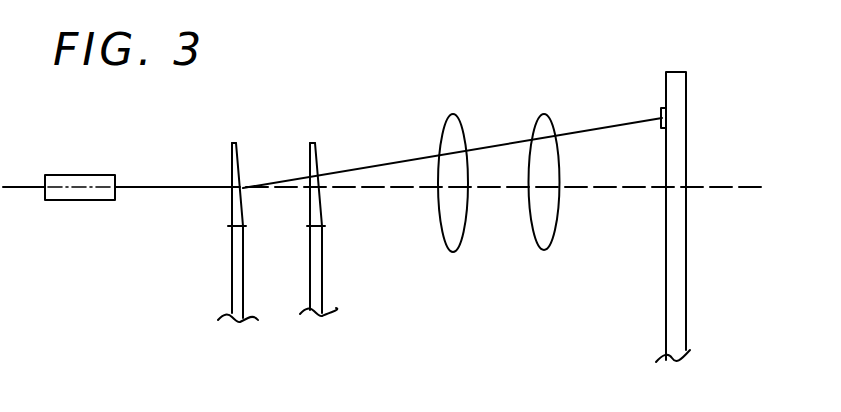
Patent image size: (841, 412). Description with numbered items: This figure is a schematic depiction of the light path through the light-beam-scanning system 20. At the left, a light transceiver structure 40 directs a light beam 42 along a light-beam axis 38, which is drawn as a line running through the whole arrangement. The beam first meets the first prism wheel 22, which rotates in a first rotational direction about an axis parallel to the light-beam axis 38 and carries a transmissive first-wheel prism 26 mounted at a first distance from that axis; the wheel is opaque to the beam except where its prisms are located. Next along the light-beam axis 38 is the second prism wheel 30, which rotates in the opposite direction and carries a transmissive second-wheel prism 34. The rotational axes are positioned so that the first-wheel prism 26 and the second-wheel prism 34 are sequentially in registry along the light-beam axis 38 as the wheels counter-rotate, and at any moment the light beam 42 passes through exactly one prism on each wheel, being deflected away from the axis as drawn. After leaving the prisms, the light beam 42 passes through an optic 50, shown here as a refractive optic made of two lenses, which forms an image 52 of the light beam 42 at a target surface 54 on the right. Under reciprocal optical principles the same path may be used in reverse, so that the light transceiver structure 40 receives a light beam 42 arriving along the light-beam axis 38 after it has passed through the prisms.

The light-beam-scanning system 20 is at (513, 72).
The first prism wheel 22 is at (230, 281).
The first-wheel prism 26 is at (232, 153).
The second prism wheel 30 is at (323, 273).
The second-wheel prism 34 is at (310, 153).
The light-beam axis 38 is at (152, 186).
The light transceiver structure 40 is at (68, 175).
The light beam 42 is at (186, 190).
The optic 50 is at (557, 252).
The image 52 is at (661, 108).
The target surface 54 is at (666, 78).